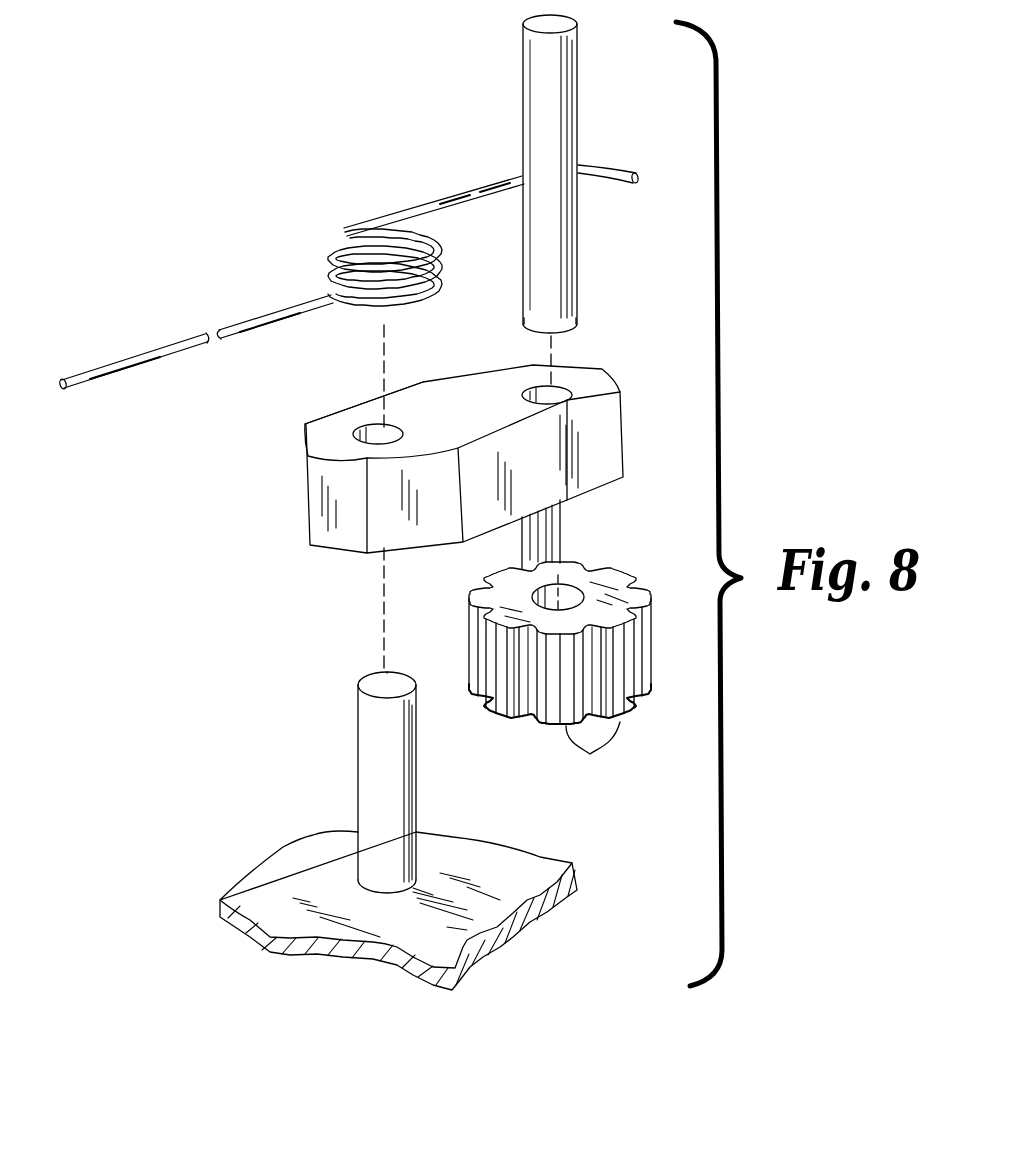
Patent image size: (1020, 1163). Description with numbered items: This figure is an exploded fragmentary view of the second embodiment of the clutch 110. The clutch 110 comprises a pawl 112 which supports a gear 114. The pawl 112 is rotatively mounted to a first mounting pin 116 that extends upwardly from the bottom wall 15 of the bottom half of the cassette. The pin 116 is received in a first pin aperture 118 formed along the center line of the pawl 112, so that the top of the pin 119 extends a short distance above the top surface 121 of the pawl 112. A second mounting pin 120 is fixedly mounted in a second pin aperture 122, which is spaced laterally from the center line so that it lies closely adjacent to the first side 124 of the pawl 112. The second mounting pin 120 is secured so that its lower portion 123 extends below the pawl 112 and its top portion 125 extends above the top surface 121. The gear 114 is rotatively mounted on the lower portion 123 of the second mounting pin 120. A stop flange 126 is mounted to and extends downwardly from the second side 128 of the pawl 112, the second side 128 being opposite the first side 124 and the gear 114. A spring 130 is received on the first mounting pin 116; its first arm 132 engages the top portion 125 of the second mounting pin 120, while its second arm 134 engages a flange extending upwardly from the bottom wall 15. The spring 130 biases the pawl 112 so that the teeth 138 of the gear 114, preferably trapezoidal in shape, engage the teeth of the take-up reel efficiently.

The bottom wall 15 is at (275, 912).
The clutch 110 is at (245, 660).
The pawl 112 is at (626, 413).
The gear 114 is at (612, 590).
The first mounting pin 116 is at (360, 785).
The first pin aperture 118 is at (352, 440).
The top of the pin 119 is at (386, 680).
The second mounting pin 120 is at (580, 106).
The top surface 121 is at (471, 405).
The second pin aperture 122 is at (572, 385).
The lower portion 123 is at (580, 298).
The first side 124 is at (607, 471).
The top portion 125 is at (533, 110).
The stop flange 126 is at (570, 536).
The second side 128 is at (417, 385).
The spring 130 is at (350, 230).
The first arm 132 is at (471, 188).
The second arm 134 is at (148, 350).
The teeth 138 is at (594, 753).